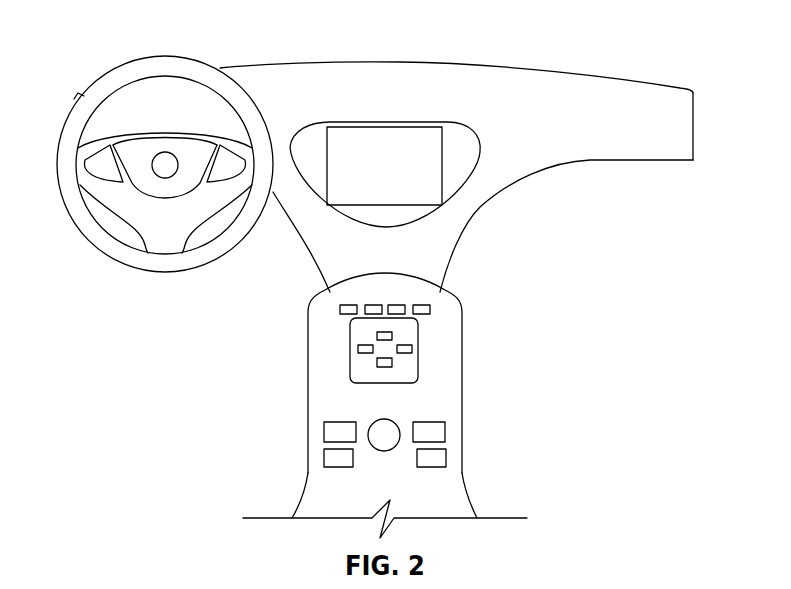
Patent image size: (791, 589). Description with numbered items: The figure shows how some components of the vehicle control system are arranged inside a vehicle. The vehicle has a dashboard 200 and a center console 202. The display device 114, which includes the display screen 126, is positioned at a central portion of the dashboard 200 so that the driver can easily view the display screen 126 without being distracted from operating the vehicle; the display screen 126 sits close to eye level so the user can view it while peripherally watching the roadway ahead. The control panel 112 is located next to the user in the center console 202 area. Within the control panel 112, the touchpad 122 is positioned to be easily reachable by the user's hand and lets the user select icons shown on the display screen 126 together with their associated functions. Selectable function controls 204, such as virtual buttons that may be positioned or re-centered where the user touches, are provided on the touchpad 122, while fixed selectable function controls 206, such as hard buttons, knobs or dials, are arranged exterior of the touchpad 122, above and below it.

The dashboard 200 is at (405, 75).
The display device 114 is at (341, 150).
The display screen 126 is at (362, 146).
The control panel 112 is at (333, 363).
The center console 202 is at (443, 335).
The touchpad 122 is at (403, 360).
The selectable function controls 204 is at (385, 368).
The fixed selectable function controls 206 is at (329, 432).